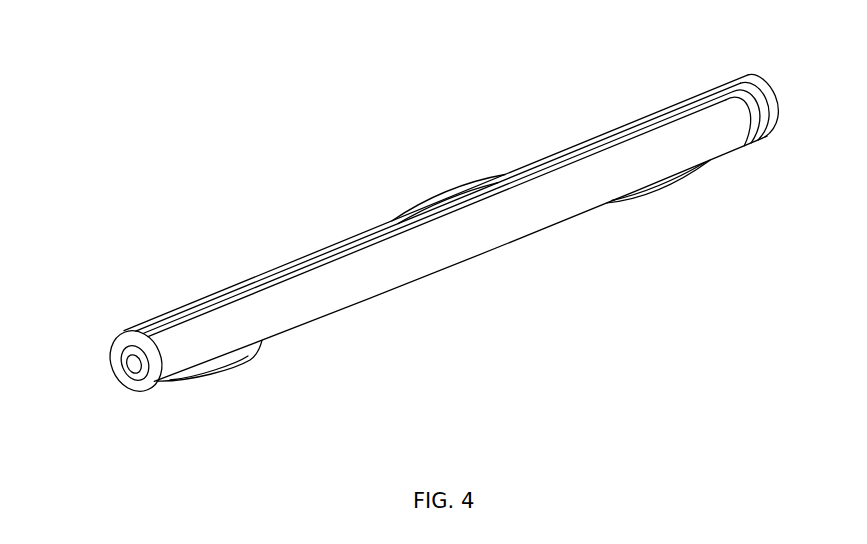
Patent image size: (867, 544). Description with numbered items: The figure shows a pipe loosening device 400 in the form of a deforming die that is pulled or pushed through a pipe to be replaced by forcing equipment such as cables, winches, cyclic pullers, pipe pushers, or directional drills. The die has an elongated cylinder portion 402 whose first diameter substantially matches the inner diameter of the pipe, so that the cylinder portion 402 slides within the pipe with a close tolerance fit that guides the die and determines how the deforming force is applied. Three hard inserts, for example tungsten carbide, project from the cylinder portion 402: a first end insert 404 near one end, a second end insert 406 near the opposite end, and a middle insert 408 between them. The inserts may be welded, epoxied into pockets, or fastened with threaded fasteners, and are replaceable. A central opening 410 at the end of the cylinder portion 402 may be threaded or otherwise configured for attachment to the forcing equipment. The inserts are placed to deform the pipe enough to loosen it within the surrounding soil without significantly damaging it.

The elongated device assembly 400 is at (626, 351).
The cylinder portion 402 is at (585, 140).
The first end insert 404 is at (680, 185).
The second end insert 406 is at (250, 360).
The middle insert 408 is at (440, 195).
The central opening 410 is at (128, 359).